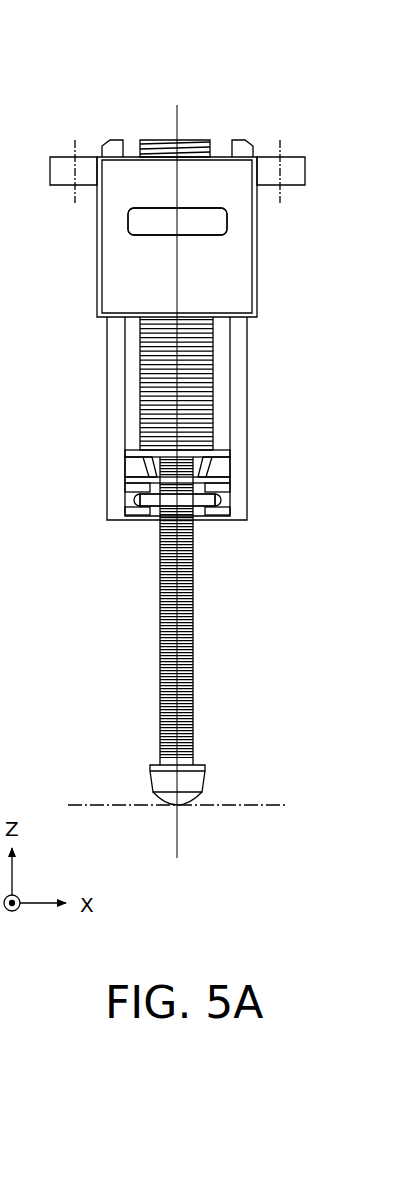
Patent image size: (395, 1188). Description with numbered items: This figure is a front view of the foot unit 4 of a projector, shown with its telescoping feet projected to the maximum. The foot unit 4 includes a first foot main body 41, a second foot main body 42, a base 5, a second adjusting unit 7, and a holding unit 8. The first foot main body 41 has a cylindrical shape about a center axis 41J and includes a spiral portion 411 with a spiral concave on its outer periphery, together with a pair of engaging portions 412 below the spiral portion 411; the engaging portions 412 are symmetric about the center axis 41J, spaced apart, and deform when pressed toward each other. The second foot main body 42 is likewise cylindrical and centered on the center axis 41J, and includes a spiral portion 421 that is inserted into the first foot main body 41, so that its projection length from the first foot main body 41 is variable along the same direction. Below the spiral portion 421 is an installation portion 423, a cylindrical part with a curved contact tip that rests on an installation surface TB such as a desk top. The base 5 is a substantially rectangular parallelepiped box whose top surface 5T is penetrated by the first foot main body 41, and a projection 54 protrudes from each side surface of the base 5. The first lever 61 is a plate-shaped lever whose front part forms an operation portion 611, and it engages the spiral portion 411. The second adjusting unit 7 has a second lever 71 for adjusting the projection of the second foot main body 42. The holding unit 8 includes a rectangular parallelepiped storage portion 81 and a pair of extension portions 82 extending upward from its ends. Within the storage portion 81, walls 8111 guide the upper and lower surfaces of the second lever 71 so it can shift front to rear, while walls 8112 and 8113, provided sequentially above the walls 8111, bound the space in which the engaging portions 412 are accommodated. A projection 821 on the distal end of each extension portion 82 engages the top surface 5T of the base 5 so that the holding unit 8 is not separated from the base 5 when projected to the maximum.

The foot unit 4 is at (282, 57).
The base 5 is at (276, 277).
The top surface of the base 5T is at (221, 151).
The projection 54 is at (63, 161).
The projection 821 is at (118, 142).
The operation portion 611 is at (220, 222).
The first lever 61 is at (177, 221).
The holding unit 8 is at (178, 443).
The extension portion 82 is at (238, 377).
The storage portion 81 is at (178, 470).
The walls 8111 is at (236, 490).
The wall 8112 is at (232, 474).
The wall 8113 is at (222, 453).
The engaging portion 412 is at (216, 468).
The first foot main body 41 is at (230, 383).
The spiral portion 411 is at (216, 400).
The center axis 41J is at (178, 840).
The second foot main body 42 is at (215, 631).
The spiral portion 421 is at (198, 672).
The installation portion 423 is at (196, 780).
The second lever 71 is at (205, 499).
The second adjusting unit 7 is at (177, 500).
The installation surface TB is at (98, 804).